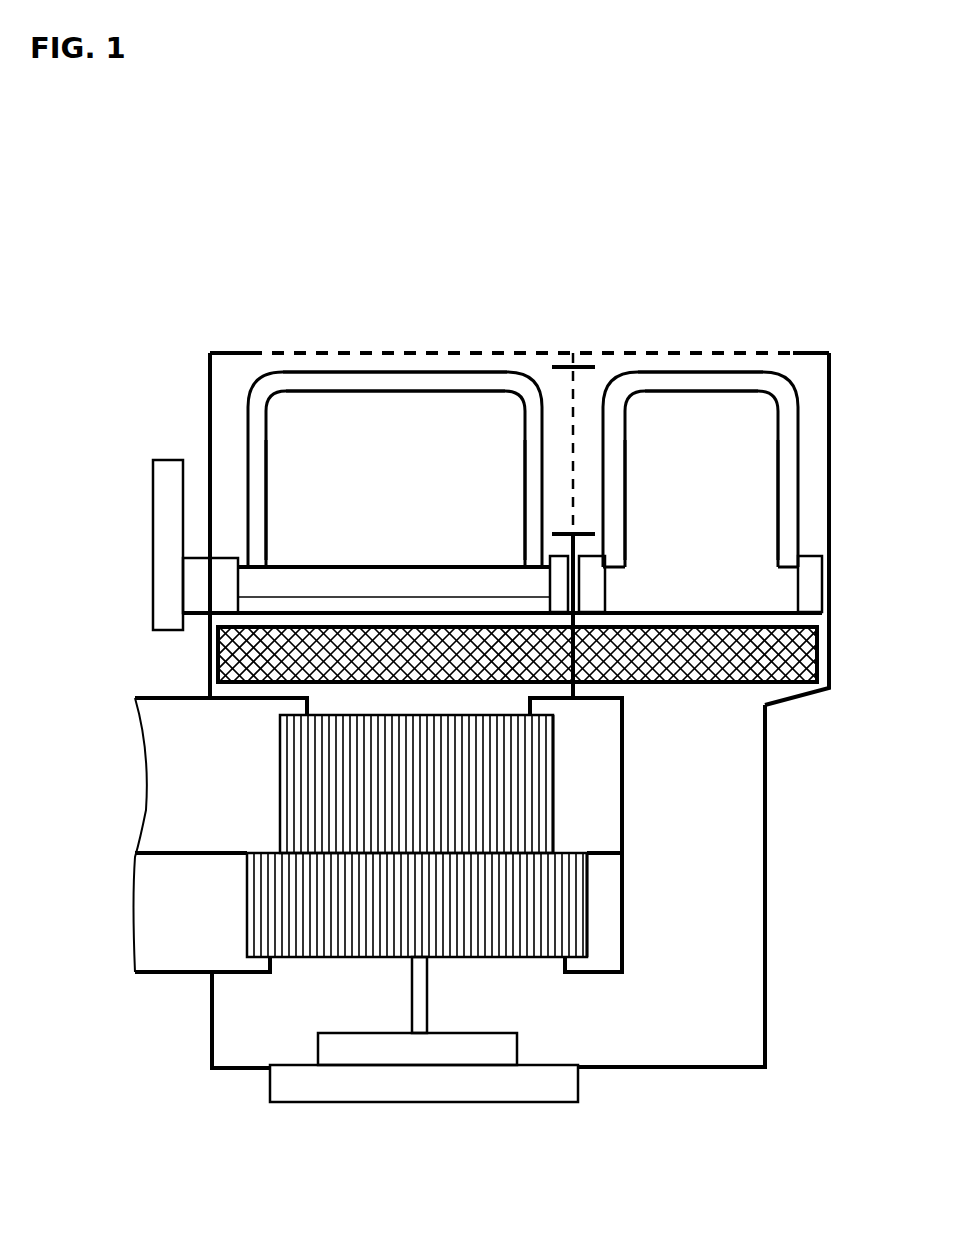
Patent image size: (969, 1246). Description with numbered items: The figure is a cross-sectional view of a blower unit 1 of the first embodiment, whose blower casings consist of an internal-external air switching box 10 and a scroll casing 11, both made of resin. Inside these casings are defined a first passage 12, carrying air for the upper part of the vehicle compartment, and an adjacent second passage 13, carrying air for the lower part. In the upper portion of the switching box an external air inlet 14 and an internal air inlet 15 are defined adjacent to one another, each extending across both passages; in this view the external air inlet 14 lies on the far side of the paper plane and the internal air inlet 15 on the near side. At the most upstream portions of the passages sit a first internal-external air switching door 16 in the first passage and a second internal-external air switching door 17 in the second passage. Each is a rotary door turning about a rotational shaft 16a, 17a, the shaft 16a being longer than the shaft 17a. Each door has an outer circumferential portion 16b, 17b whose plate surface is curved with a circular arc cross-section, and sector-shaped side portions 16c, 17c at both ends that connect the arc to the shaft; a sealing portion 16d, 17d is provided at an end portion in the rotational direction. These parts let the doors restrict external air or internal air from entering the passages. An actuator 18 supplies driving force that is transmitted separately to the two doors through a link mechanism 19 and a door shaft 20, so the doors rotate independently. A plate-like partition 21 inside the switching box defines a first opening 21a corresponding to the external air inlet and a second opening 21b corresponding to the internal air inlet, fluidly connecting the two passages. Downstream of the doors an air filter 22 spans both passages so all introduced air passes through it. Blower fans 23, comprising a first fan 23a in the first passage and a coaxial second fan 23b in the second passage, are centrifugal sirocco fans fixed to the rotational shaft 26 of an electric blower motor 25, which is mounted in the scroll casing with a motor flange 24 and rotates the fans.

The blower unit 1 is at (466, 348).
The internal-external air switching box 10 is at (831, 494).
The scroll casing 11 is at (767, 982).
The first passage 12 is at (393, 702).
The second passage 13 is at (178, 907).
The external air inlet 14 is at (788, 364).
The internal air inlet 15 is at (811, 315).
The first internal-external air switching door 16 is at (437, 352).
The rotational shaft 16a is at (213, 397).
The outer circumferential portion 16b is at (358, 388).
The side portions 16c is at (264, 445).
The sealing portion 16d is at (398, 371).
The second internal-external air switching door 17 is at (712, 368).
The rotational shaft 17a is at (808, 556).
The outer circumferential portion 17b is at (745, 372).
The side portions 17c is at (630, 430).
The sealing portion 17d is at (672, 372).
The actuator 18 is at (153, 510).
The link mechanism 19 is at (199, 558).
The door shaft 20 is at (223, 557).
The partition 21 is at (556, 362).
The first opening 21a is at (604, 368).
The second opening 21b is at (637, 383).
The air filter 22 is at (767, 684).
The blower fans 23 is at (835, 797).
The first fan 23a is at (553, 810).
The second fan 23b is at (587, 882).
The motor flange 24 is at (490, 1104).
The electric blower motor 25 is at (445, 1090).
The rotational shaft 26 is at (410, 1000).